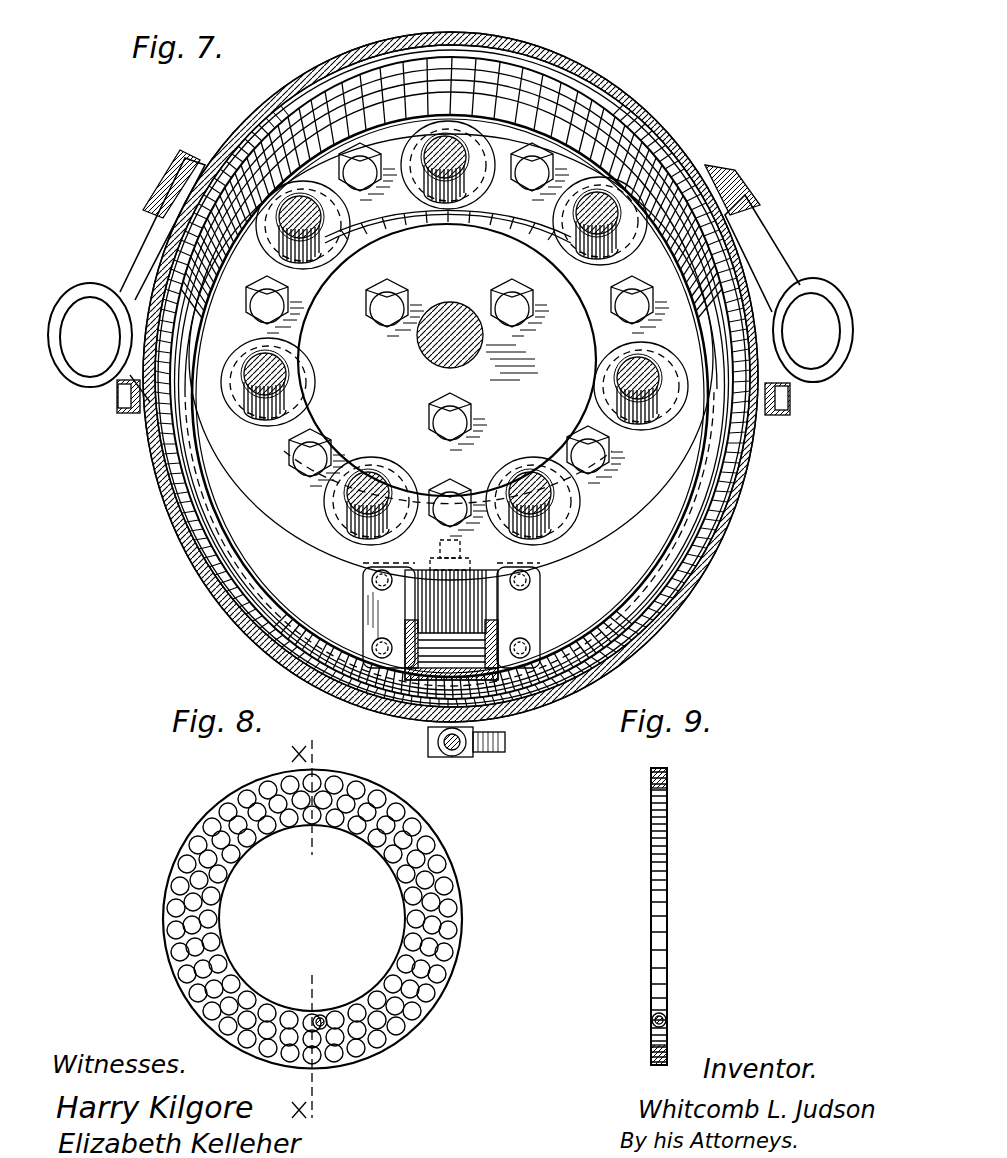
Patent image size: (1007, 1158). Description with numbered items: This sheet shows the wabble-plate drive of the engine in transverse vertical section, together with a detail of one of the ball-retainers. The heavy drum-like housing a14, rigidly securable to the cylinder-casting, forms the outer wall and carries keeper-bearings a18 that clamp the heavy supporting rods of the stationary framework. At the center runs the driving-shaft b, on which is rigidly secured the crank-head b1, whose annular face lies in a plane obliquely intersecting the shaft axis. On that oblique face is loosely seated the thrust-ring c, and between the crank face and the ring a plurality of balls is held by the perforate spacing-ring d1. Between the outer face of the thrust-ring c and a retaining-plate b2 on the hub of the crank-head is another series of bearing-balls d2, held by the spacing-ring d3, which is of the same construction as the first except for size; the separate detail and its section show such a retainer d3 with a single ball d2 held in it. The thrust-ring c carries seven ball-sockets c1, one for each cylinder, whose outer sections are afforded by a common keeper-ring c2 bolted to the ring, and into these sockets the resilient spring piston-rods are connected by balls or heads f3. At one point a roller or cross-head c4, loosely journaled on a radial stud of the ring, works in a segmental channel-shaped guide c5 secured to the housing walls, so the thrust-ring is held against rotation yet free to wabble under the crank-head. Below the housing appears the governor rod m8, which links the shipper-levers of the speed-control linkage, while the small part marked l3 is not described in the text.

In FIG. 7, the drum-like housing a14 is at (637, 80).
In FIG. 7, the thrust-ring c is at (650, 140).
In FIG. 7, the crank-head b1 is at (330, 87).
In FIG. 7, the spacing-ring d1 is at (515, 78).
In FIG. 7, the keeper-ring c2 is at (664, 494).
In FIG. 7, the retaining-plate b2 is at (348, 435).
In FIG. 7, the balls or heads f3 is at (592, 500).
In FIG. 7, the ball-sockets c1 is at (260, 253).
In FIG. 7, the driving-shaft b is at (433, 355).
In FIG. 7, the key l3 is at (441, 549).
In FIG. 7, the segmental channel-shaped guide c5 is at (407, 612).
In FIG. 7, the roller or cross-head c4 is at (540, 592).
In FIG. 7, the rod m8 is at (455, 757).
In FIG. 7, the keeper-bearings a18 is at (82, 288).
In FIG. 8, the spacing-ring d3 is at (462, 887).
In FIG. 9, the spacing-ring d3 is at (663, 879).
In FIG. 8, the bearing-balls d2 is at (322, 1014).
In FIG. 9, the bearing-balls d2 is at (667, 1019).